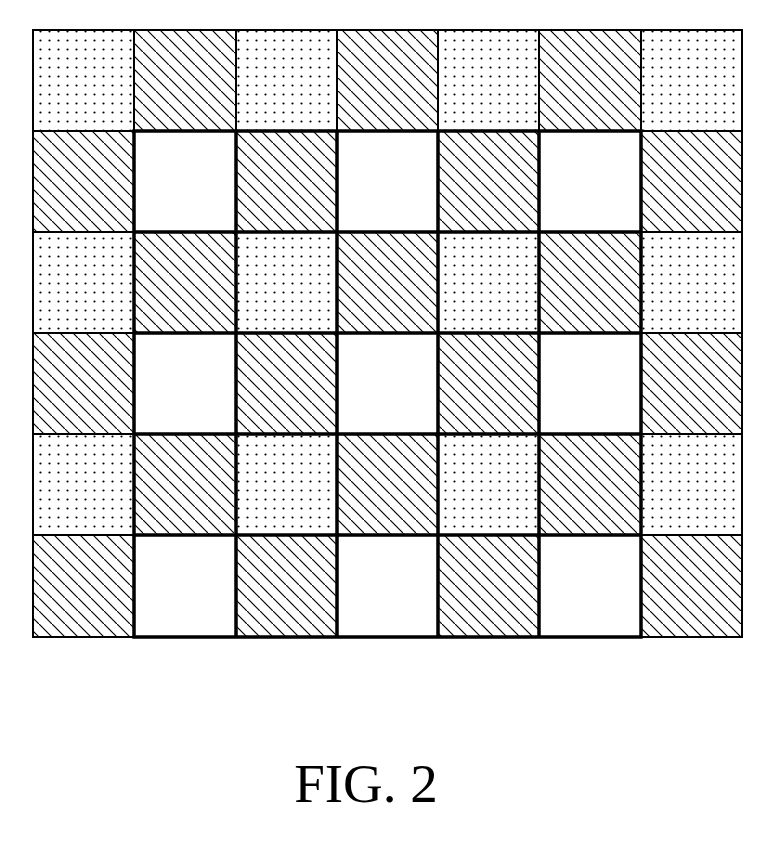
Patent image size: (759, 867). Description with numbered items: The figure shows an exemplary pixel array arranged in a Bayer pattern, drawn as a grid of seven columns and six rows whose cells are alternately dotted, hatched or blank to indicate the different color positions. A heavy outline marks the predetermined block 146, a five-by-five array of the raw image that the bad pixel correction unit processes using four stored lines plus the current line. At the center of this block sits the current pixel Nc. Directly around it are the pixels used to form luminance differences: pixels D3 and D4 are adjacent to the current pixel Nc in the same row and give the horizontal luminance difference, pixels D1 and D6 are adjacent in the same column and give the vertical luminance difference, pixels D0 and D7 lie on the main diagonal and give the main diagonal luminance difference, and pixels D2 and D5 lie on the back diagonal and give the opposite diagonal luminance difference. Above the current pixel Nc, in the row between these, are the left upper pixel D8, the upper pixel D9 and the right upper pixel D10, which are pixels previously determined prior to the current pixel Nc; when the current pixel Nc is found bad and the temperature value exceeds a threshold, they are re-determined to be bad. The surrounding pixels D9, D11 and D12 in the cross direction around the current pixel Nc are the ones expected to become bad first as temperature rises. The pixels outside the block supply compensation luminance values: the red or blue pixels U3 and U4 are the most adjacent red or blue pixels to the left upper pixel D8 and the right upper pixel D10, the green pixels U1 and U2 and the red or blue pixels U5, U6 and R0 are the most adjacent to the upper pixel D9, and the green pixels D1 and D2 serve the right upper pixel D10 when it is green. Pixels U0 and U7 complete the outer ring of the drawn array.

The predetermined block 146 is at (387, 376).
The pixel U0 is at (83, 181).
The green pixel U1 is at (286, 181).
The green pixel U2 is at (488, 181).
The red or blue pixel U3 is at (286, 80).
The red or blue pixel U4 is at (488, 80).
The red or blue pixel U5 is at (387, 80).
The red or blue pixel U6 is at (590, 80).
The pixel U7 is at (691, 181).
The pixel adjacent in main diagonal line D0 is at (185, 181).
The pixel adjacent in same column D1 is at (387, 181).
The pixel adjacent in back diagonal line D2 is at (590, 181).
The pixel adjacent in same row D3 is at (185, 383).
The pixel adjacent in same row D4 is at (590, 383).
The pixel adjacent in back diagonal line D5 is at (185, 586).
The pixel adjacent in same column D6 is at (387, 586).
The pixel adjacent in main diagonal line D7 is at (590, 586).
The left upper pixel D8 is at (286, 282).
The upper pixel D9 is at (387, 282).
The right upper pixel D10 is at (488, 282).
The surrounding pixel D11 is at (286, 383).
The surrounding pixel D12 is at (488, 383).
The red or blue pixel R0 is at (590, 282).
The current pixel Nc is at (387, 383).